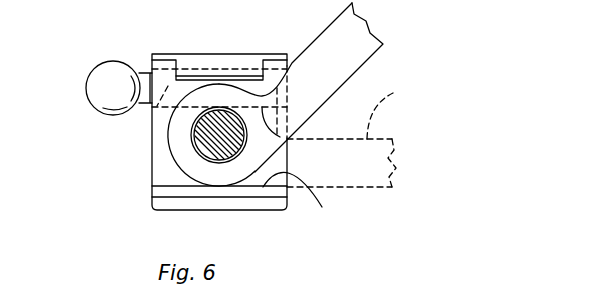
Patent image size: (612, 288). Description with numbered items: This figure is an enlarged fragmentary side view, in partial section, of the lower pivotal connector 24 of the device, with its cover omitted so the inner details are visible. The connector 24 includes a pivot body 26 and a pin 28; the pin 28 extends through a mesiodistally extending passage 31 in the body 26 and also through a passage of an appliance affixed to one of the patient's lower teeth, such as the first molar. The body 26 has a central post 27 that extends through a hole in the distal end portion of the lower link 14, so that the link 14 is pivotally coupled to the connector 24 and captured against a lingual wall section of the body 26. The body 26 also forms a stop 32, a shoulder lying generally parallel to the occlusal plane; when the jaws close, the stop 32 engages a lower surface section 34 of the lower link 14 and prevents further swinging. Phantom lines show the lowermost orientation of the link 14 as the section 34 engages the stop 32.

The lower link 14 is at (340, 78).
The lower pivotal connector 24 is at (128, 177).
The pivot body 26 is at (172, 203).
The central post 27 is at (212, 141).
The pin 28 is at (102, 88).
The passage 31 is at (262, 88).
The stop 32 is at (306, 202).
The lower surface section 34 is at (290, 140).